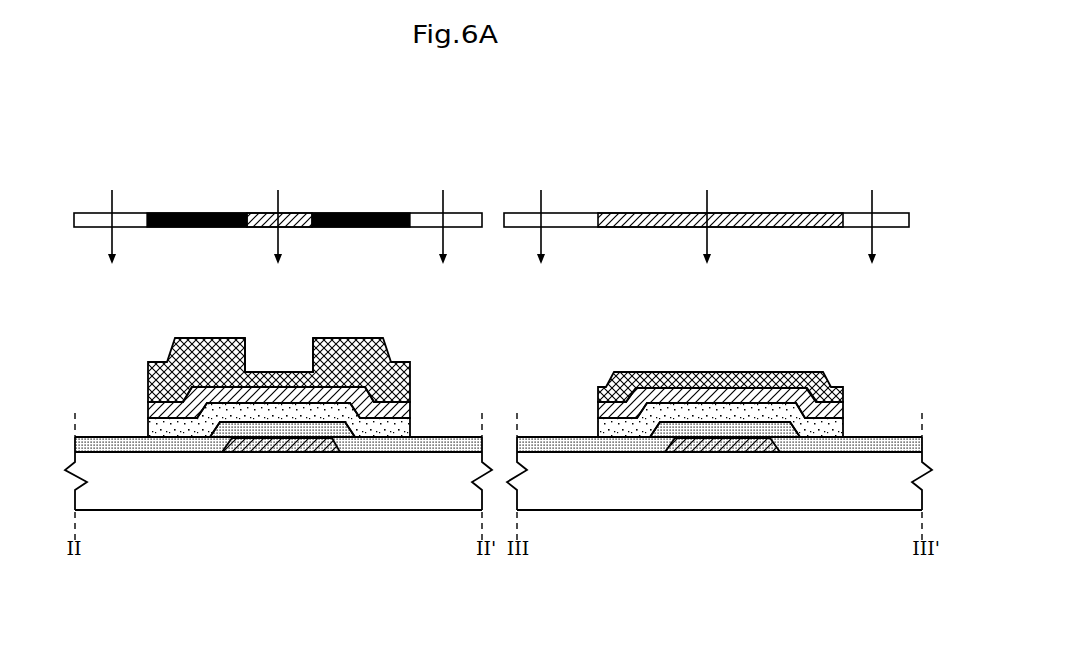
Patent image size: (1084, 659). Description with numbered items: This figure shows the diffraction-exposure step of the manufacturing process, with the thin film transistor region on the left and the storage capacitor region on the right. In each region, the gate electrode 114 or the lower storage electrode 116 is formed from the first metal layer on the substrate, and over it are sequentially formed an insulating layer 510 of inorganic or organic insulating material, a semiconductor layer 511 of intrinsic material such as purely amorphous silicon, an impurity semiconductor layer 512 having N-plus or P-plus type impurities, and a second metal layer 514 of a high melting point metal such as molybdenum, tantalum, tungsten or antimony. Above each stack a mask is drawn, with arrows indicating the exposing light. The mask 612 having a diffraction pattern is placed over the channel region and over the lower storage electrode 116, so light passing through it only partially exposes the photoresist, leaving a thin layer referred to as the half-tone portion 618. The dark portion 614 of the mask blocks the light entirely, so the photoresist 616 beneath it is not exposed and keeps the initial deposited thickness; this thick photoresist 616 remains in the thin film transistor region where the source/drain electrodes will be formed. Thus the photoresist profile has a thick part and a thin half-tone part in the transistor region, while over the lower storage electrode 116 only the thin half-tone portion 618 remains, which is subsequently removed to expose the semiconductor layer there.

The gate electrode 114 is at (282, 452).
The lower storage electrode 116 is at (720, 452).
The insulating layer 510 is at (158, 452).
The semiconductor layer 511 is at (405, 432).
The impurity semiconductor layer 512 is at (148, 420).
The second metal layer 514 is at (410, 400).
The mask having a diffraction pattern 612 is at (290, 213).
The dark portion of the mask 614 is at (203, 212).
The photoresist 616 is at (223, 348).
The half-tone portion 618 is at (281, 363).